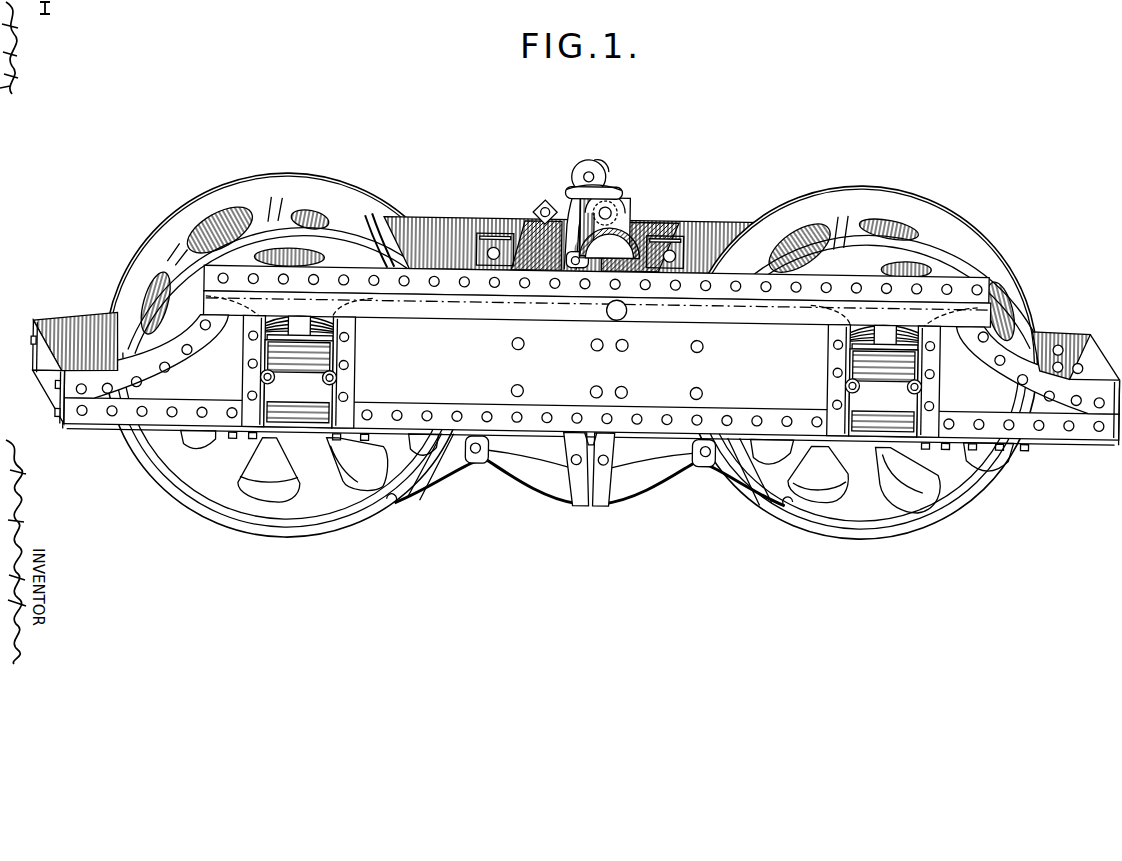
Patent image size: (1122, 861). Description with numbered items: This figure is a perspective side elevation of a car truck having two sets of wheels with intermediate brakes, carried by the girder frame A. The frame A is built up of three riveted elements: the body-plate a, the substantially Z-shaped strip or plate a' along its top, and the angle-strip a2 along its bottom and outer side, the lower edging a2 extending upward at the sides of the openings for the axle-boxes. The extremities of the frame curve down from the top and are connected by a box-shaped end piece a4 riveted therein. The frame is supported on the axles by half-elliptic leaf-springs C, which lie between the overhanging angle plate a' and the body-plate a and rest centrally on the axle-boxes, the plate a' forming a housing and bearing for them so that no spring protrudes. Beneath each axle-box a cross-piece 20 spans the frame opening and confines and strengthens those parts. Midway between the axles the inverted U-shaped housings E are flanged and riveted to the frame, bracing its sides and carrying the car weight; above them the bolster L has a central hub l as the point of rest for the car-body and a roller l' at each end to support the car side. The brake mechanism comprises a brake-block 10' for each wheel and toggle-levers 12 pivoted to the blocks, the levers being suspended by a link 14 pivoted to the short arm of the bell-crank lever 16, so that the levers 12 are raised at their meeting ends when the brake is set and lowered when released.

The frame A is at (576, 317).
The body-plate a is at (591, 363).
The Z strip or plate a' is at (596, 312).
The angle-strip a2 is at (415, 425).
The box-shaped end piece a4 is at (1072, 332).
The half-elliptic leaf-springs C is at (252, 326).
The housings E is at (512, 231).
The brake quadrant or bell-crank lever 16 is at (541, 208).
The roller l' is at (589, 206).
The bolster L is at (614, 190).
The hub l is at (621, 213).
The cross-piece 20 is at (571, 359).
The toggle-levers 12 is at (590, 469).
The link 14 is at (606, 446).
The brake-block 10' is at (589, 474).